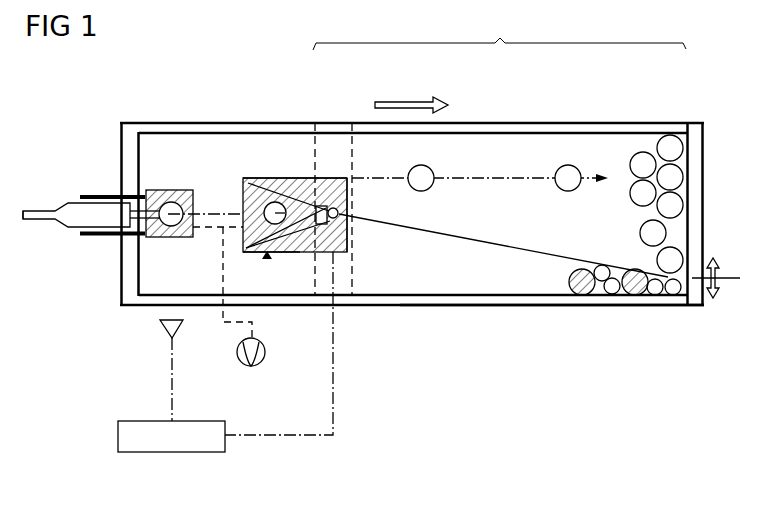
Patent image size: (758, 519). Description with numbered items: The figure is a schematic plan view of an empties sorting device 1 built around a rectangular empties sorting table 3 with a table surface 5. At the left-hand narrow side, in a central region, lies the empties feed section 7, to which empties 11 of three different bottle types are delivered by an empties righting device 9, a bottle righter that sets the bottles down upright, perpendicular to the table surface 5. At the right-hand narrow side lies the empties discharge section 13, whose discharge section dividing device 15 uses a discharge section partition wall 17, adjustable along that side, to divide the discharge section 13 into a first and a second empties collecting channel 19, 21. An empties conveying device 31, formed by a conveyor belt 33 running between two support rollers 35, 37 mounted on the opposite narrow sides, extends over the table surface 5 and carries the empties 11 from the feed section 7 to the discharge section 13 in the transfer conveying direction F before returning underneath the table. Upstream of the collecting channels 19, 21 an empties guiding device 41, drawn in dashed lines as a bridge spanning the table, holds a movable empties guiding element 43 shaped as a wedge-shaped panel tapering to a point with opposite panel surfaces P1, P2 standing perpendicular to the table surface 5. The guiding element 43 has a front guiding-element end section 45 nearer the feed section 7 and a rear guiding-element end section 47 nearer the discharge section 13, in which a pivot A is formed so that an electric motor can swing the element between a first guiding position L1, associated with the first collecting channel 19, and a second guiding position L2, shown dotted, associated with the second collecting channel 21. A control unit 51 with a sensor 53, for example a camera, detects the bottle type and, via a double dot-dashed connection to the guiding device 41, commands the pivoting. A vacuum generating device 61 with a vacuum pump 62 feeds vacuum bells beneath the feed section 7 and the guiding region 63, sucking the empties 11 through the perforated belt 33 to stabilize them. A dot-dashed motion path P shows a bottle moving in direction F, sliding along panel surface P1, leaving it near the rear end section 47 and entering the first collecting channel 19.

The empties sorting device 1 is at (446, 432).
The empties sorting table 3 is at (663, 308).
The table surface 5 is at (606, 124).
The empties feed section 7 is at (177, 190).
The empties righting device 9 is at (92, 237).
The empties 11 is at (45, 221).
The empties discharge section 13 is at (499, 31).
The discharge section dividing device 15 is at (713, 322).
The discharge section partition wall 17 is at (455, 237).
The first empties collecting channel 19 is at (509, 150).
The second empties collecting channel 21 is at (472, 297).
The empties conveying device 31 is at (101, 332).
The conveyor belt 33 is at (512, 307).
The support roller 35 is at (121, 309).
The support roller 37 is at (695, 121).
The empties guiding device 41 is at (354, 277).
The empties guiding element 43 is at (307, 220).
The front guiding-element end section 45 is at (223, 260).
The rear guiding-element end section 47 is at (348, 205).
The control unit 51 is at (167, 453).
The sensor 53 is at (169, 339).
The vacuum generating device 61 is at (226, 336).
The vacuum pump 62 is at (263, 363).
The guiding region 63 is at (250, 178).
The transfer conveying direction F is at (413, 101).
The motion path P is at (508, 181).
The panel surface P1 is at (243, 218).
The panel surface P2 is at (280, 253).
The pivot A is at (348, 222).
The first guiding position L1 is at (268, 260).
The second guiding position L2 is at (310, 196).